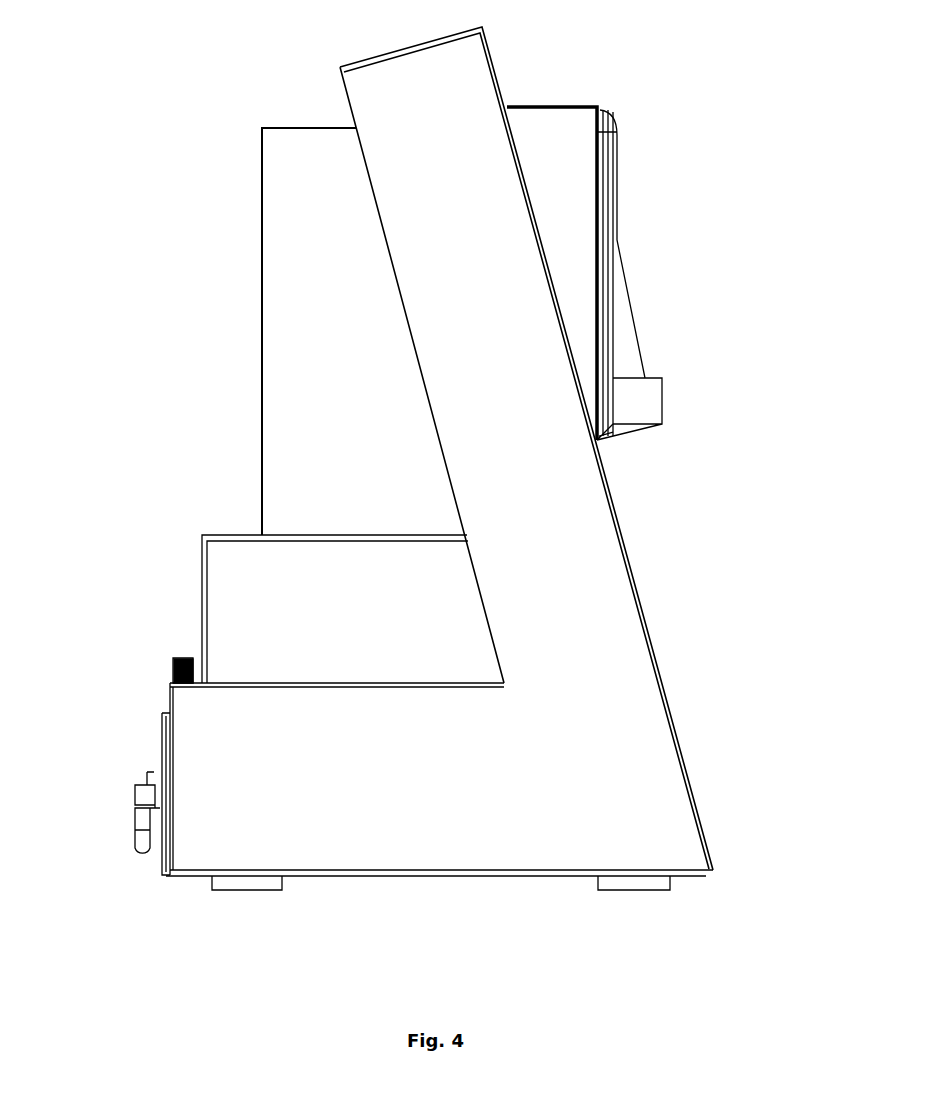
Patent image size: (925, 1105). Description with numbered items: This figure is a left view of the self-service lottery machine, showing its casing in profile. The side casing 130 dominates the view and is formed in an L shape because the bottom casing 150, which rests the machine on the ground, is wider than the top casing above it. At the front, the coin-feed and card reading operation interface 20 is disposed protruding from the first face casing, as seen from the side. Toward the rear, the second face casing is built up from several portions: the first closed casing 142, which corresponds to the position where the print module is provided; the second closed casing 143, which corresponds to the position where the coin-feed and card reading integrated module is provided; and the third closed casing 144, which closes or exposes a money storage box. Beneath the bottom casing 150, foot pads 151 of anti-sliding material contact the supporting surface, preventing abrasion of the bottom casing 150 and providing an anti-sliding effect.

The coin-feed and card reading operation interface 20 is at (652, 273).
The side casing 130 is at (576, 525).
The first closed casing 142 is at (243, 617).
The second closed casing 143 is at (297, 375).
The third closed casing 144 is at (162, 750).
The bottom casing 150 is at (439, 846).
The foot pad 151 is at (635, 963).